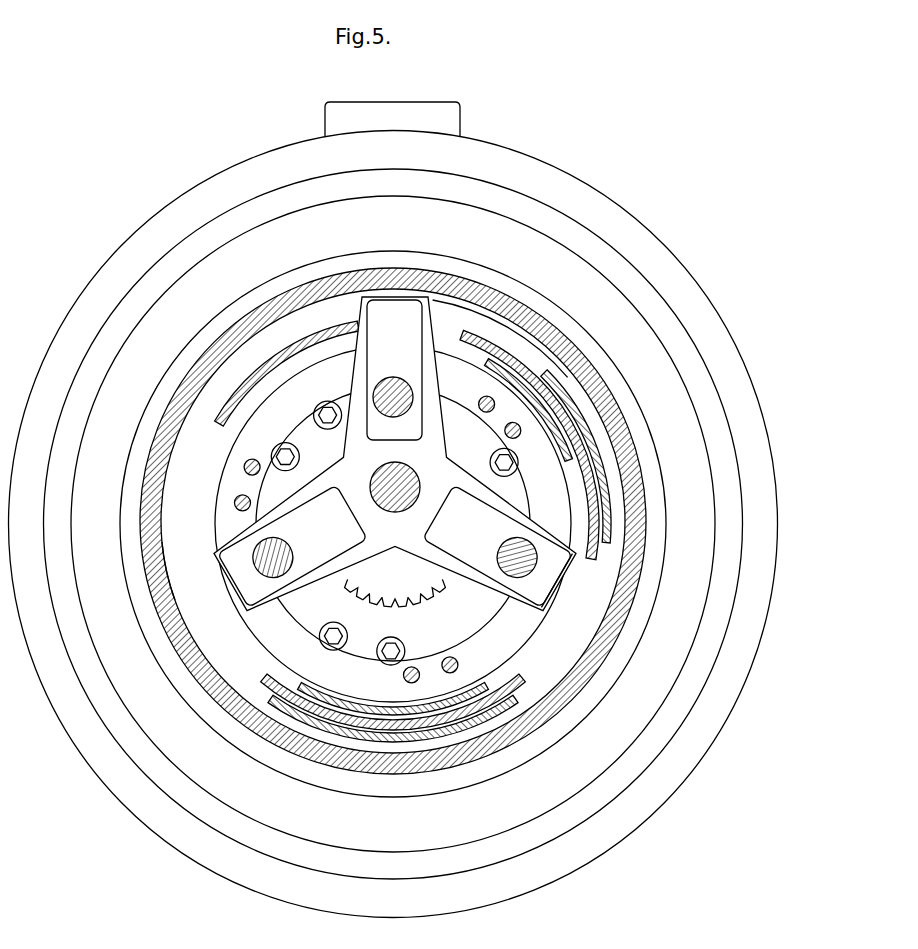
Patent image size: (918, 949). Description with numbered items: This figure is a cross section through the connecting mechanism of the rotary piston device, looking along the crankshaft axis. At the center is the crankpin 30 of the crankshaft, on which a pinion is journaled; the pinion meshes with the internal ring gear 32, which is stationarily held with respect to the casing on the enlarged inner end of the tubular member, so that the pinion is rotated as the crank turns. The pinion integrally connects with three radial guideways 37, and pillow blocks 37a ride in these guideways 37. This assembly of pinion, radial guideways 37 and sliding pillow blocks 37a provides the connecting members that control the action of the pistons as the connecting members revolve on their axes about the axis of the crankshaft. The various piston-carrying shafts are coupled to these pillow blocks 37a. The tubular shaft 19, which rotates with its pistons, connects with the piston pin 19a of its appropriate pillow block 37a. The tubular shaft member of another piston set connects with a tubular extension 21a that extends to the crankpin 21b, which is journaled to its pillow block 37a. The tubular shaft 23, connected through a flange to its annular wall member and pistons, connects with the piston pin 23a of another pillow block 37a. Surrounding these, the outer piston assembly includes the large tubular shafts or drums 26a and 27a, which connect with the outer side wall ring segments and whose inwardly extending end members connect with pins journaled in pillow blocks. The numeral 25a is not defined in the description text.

The tubular shaft 19 is at (445, 377).
The piston pin 19a is at (530, 588).
The tubular extension 21a is at (457, 372).
The crankpin 21b is at (400, 377).
The tubular shaft 23 is at (586, 522).
The piston pin 23a is at (255, 552).
The band 25a is at (512, 323).
The tubular shaft or drum 26a is at (528, 373).
The tubular shaft or drum 27a is at (575, 415).
The crankpin 30 is at (420, 478).
The internal ring gear 32 is at (375, 599).
The radial guideways 37 is at (412, 308).
The pillow blocks 37a is at (373, 372).